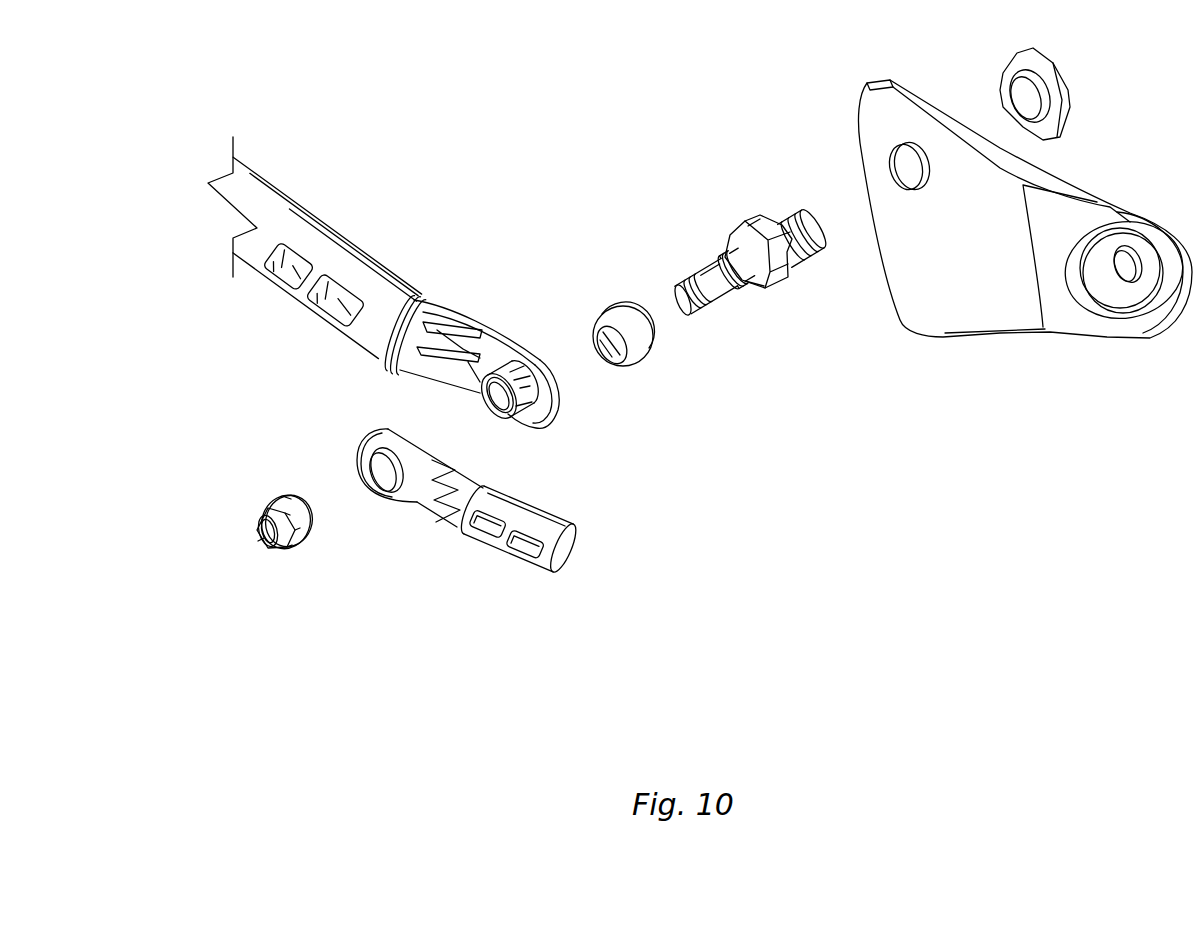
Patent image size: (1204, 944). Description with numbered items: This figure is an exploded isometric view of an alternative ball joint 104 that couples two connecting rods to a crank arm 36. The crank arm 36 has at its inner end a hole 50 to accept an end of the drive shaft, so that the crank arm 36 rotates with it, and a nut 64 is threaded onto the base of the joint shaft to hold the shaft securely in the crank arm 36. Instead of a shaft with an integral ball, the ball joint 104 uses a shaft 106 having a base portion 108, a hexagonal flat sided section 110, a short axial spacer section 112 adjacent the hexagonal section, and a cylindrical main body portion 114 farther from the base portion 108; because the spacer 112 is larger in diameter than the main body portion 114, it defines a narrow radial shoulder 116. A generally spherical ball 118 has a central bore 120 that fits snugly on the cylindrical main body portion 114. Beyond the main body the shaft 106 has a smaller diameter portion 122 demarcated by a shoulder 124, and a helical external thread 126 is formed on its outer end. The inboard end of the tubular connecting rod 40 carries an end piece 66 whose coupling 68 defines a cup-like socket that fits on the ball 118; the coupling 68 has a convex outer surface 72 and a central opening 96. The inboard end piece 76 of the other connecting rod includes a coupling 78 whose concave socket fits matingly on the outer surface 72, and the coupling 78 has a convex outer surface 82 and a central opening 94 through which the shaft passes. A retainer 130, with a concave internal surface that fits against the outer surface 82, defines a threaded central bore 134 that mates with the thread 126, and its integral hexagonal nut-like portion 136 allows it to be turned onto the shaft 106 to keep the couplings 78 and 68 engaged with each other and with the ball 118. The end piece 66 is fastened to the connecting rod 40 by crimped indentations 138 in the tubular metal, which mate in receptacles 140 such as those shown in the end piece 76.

The crank arm 36 is at (980, 300).
The connecting rod 40 is at (347, 227).
The hole 50 is at (908, 157).
The nut 64 is at (1067, 87).
The end piece 66 is at (478, 313).
The coupling 68 is at (556, 421).
The outer surface 72 is at (522, 417).
The inboard end piece 76 is at (530, 509).
The coupling 78 is at (377, 437).
The convex outer surface 82 is at (370, 440).
The opening 94 is at (373, 468).
The opening 96 is at (503, 397).
The ball joint 104 is at (540, 226).
The shaft 106 is at (737, 296).
The base portion 108 is at (807, 260).
The hexagonal flat sided section 110 is at (760, 222).
The axial spacer section 112 is at (745, 240).
The cylindrical main body portion 114 is at (727, 257).
The radial shoulder 116 is at (760, 287).
The ball 118 is at (629, 320).
The central bore 120 is at (607, 363).
The smaller diameter portion 122 is at (704, 276).
The shoulder 124 is at (711, 258).
The helical external thread 126 is at (704, 313).
The retainer 130 is at (300, 543).
The threaded central bore 134 is at (260, 543).
The hexagonal flat sided nut-like portion 136 is at (288, 497).
The crimped indentations 138 is at (353, 310).
The receptacles 140 is at (490, 523).